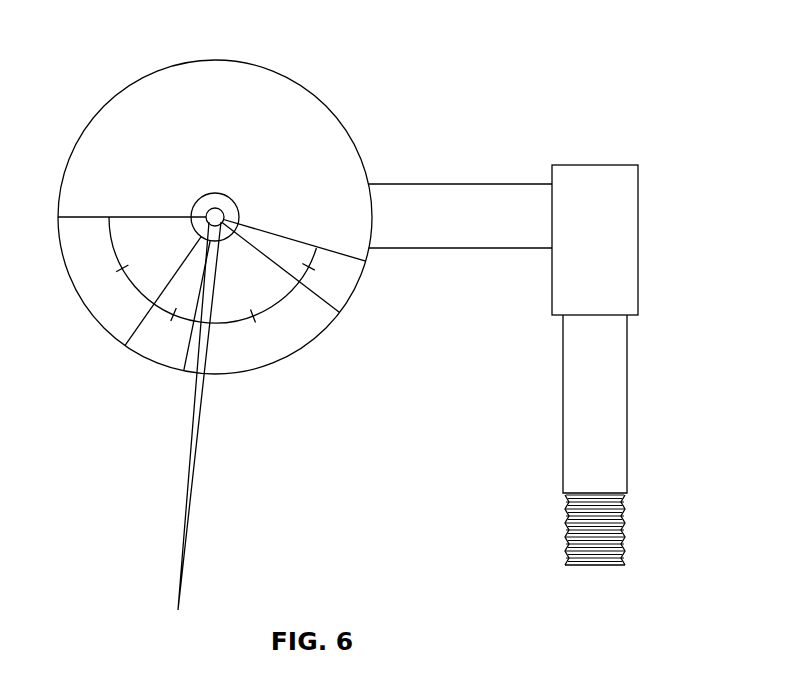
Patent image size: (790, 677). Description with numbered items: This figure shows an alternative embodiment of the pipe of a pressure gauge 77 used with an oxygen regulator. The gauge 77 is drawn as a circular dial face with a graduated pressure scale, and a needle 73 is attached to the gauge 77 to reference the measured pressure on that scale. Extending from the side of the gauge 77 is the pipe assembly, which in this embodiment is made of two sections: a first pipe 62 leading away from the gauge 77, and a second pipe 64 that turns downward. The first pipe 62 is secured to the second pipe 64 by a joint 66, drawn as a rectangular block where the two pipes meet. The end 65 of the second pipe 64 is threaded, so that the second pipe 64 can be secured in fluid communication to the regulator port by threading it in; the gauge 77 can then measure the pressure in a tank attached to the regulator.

The gauge 77 is at (298, 80).
The needle 73 is at (195, 460).
The first pipe 62 is at (455, 183).
The joint 66 is at (639, 250).
The second pipe 64 is at (627, 363).
The end 65 is at (622, 540).